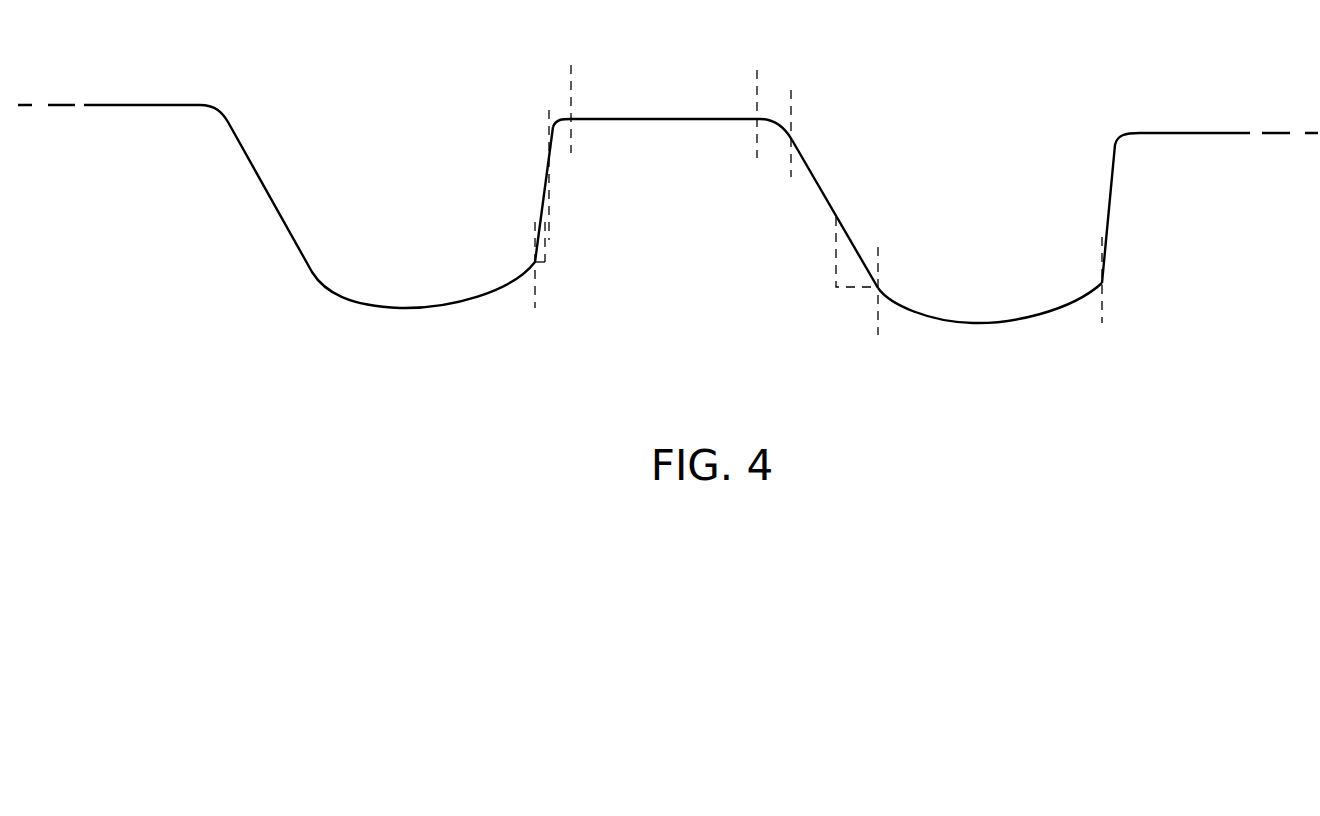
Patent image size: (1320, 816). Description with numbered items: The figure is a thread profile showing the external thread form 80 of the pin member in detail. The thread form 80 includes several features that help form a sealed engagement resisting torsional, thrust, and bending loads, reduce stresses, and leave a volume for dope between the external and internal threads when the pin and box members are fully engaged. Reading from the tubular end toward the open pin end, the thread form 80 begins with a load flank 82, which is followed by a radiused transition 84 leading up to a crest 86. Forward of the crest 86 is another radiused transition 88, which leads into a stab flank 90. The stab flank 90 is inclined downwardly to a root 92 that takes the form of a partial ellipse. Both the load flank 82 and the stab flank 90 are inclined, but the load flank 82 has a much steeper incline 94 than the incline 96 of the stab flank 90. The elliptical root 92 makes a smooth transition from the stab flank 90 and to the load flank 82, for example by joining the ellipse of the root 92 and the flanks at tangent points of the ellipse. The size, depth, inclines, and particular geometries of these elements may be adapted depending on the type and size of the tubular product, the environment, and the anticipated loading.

The thread form 80 is at (748, 296).
The load flank 82 is at (549, 163).
The radiused transition 84 is at (568, 119).
The crest 86 is at (668, 117).
The radiused transition 88 is at (779, 124).
The stab flank 90 is at (820, 181).
The root 92 is at (994, 325).
The incline 94 is at (546, 252).
The incline 96 is at (835, 250).